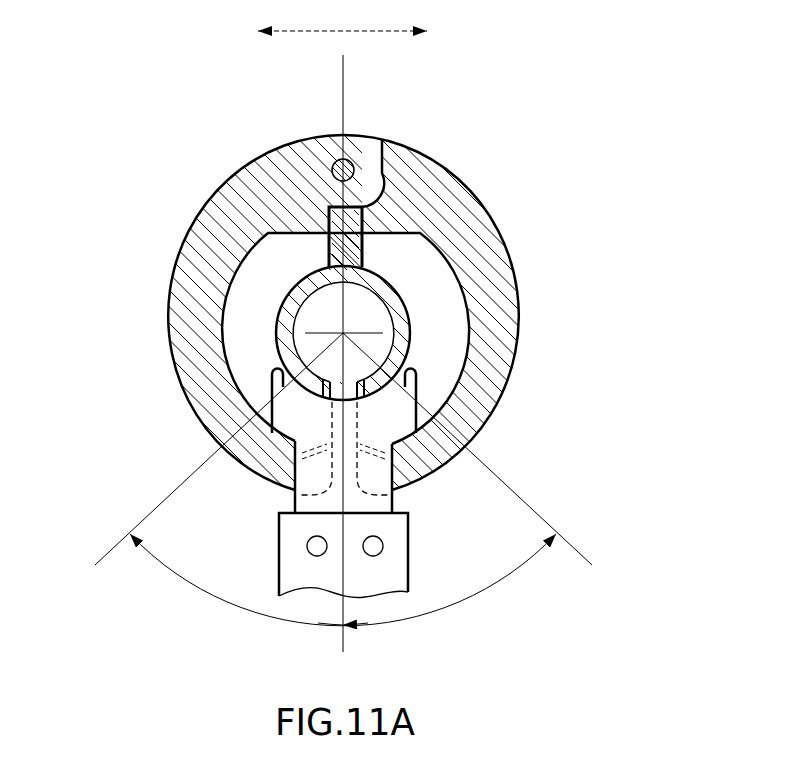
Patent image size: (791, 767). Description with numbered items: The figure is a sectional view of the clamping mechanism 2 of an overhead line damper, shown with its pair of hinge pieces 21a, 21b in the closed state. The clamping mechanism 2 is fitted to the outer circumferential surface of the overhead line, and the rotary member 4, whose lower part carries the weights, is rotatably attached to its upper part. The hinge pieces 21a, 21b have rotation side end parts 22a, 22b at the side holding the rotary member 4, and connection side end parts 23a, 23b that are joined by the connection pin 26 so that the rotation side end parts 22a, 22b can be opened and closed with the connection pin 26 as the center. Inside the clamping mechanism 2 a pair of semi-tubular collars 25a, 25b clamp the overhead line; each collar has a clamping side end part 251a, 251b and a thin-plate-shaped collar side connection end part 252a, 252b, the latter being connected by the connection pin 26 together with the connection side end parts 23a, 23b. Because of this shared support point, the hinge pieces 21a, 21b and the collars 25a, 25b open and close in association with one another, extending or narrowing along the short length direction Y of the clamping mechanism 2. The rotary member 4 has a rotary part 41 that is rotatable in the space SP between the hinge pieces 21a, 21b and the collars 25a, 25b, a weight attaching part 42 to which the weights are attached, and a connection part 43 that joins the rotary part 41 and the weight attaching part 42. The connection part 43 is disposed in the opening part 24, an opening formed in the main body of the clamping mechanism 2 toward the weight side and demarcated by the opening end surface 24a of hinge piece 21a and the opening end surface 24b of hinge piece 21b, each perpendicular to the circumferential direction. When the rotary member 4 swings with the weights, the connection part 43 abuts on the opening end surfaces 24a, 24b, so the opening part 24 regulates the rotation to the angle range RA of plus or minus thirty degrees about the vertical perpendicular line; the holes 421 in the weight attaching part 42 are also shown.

The clamping mechanism 2 is at (472, 161).
The hinge piece 21a is at (172, 270).
The hinge piece 21b is at (512, 262).
The rotation side end part 22a is at (280, 493).
The rotation side end part 22b is at (410, 493).
The connection side end part 23a is at (379, 166).
The connection side end part 23b is at (386, 150).
The opening part 24 is at (257, 440).
The opening end surface 24a is at (233, 448).
The opening end surface 24b is at (443, 427).
The collar 25a is at (277, 293).
The collar 25b is at (414, 318).
The clamping side end part 251a is at (328, 383).
The clamping side end part 251b is at (362, 373).
The collar side connection end part 252a is at (250, 180).
The collar side connection end part 252b is at (465, 188).
The connection pin 26 is at (330, 170).
The rotary member 4 is at (415, 520).
The rotary part 41 is at (412, 374).
The weight attaching part 42 is at (369, 592).
The plate holes 421 is at (374, 553).
The connection part 43 is at (352, 463).
The space SP is at (412, 252).
The angle range RA is at (343, 483).
The short length direction Y is at (342, 15).